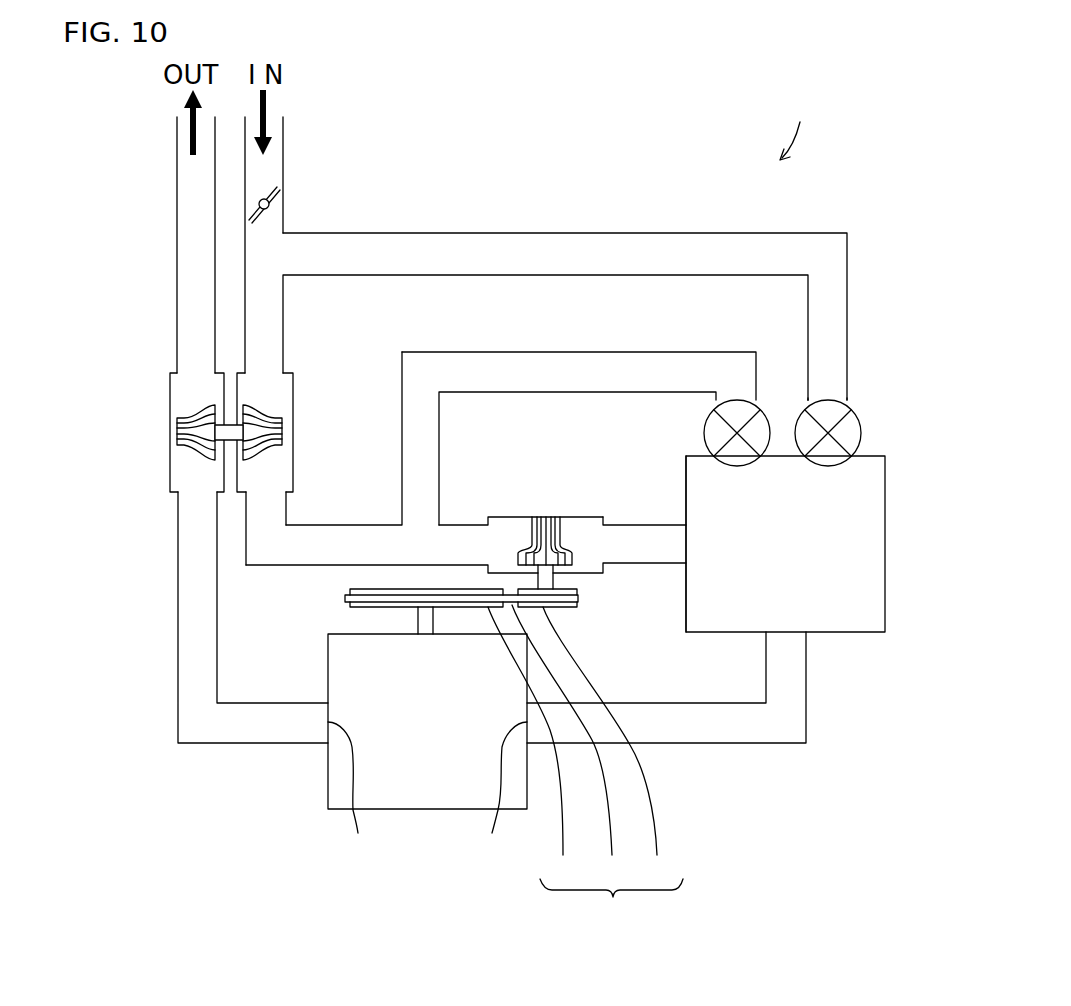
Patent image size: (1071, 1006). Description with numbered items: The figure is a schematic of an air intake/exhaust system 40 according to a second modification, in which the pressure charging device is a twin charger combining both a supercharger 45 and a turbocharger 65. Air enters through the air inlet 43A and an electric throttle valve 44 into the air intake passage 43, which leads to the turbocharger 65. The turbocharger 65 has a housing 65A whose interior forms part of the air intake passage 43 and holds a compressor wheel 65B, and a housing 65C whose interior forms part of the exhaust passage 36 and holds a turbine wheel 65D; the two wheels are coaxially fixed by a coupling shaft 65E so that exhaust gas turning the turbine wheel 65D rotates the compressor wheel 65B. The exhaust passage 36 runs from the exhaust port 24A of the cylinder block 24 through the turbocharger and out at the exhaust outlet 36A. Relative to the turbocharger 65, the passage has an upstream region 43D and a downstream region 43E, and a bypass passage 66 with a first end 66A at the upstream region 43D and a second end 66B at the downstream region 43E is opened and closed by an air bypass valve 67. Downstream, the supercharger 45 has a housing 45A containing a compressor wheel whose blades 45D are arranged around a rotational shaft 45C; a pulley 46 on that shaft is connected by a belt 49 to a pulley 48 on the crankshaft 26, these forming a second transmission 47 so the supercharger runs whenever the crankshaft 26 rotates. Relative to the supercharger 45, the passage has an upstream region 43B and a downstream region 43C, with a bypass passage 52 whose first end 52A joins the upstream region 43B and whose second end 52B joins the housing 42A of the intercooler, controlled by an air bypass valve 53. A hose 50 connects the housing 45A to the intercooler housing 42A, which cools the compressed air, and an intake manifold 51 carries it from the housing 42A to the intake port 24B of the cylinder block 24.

The air intake/exhaust system 40 is at (857, 114).
The exhaust outlet pipe 36A is at (183, 119).
The air inlet 43A is at (272, 119).
The electric throttle valve 44 is at (280, 203).
The first end 66A is at (288, 257).
The upstream region 43D is at (287, 322).
The bypass passage 66 is at (850, 320).
The air bypass valve 67 is at (862, 434).
The second end 66B is at (827, 398).
The turbocharger 65 is at (153, 376).
The housing 65A is at (294, 398).
The compressor wheel 65B is at (268, 455).
The housing 65C is at (175, 430).
The turbine wheel 65D is at (193, 453).
The coupling shaft 65E is at (230, 437).
The exhaust passage 36 is at (178, 598).
The downstream region 43E is at (245, 517).
The first end 52A is at (418, 522).
The bypass passage 52 is at (614, 352).
The second end 52B is at (735, 395).
The air bypass valve 53 is at (707, 428).
The air intake passage 43 is at (483, 523).
The upstream region 43B is at (452, 523).
The downstream region 43C is at (783, 468).
The supercharger 45 is at (534, 512).
The housing 45A is at (585, 487).
The blades 45D is at (553, 557).
The rotational shaft 45C is at (548, 578).
The crankshaft 26 is at (418, 622).
The hose 50 is at (655, 567).
The housing 42A is at (865, 633).
The intake manifold 51 is at (740, 744).
The cylinder block 24 is at (427, 809).
The exhaust port 24A is at (358, 792).
The intake port 24B is at (498, 792).
The pulley 48 is at (533, 745).
The belt 49 is at (570, 744).
The pulley 46 is at (608, 745).
The second transmission 47 is at (611, 903).